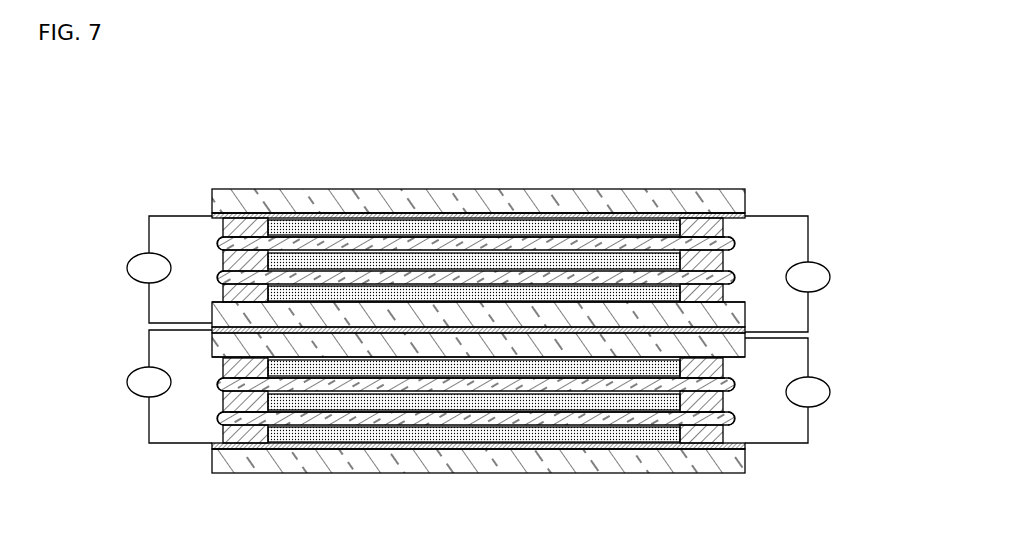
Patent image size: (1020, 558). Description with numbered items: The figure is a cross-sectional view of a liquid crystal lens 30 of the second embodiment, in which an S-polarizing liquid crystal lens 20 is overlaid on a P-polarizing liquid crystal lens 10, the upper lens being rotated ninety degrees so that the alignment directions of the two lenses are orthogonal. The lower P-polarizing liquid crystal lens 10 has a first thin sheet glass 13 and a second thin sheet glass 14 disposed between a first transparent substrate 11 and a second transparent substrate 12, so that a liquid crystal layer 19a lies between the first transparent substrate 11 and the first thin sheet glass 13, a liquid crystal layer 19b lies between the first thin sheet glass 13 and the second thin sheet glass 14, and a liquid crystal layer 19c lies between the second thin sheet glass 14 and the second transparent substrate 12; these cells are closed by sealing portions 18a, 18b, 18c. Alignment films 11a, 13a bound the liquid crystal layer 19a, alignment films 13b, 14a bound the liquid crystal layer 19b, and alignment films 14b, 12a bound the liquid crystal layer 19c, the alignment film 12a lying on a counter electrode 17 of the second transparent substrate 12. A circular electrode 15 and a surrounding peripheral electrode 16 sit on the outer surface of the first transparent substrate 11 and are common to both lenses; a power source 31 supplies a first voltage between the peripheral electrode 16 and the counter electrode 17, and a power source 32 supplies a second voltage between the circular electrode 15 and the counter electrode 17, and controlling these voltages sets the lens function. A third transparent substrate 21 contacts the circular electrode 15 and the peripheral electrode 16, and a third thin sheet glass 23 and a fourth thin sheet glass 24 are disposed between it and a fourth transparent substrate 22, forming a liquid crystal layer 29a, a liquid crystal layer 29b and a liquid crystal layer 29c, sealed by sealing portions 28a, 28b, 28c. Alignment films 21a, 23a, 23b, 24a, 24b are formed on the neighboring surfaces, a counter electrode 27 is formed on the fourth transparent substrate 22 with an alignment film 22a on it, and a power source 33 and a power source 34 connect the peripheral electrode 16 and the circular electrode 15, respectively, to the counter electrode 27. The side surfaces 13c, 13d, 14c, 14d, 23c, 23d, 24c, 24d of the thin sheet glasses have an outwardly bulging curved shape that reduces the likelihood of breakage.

The liquid crystal lens 30 is at (735, 118).
The S-polarizing liquid crystal lens 20 is at (70, 182).
The P-polarizing liquid crystal lens 10 is at (70, 330).
The fourth transparent substrate 22 is at (678, 200).
The alignment film 22a is at (361, 219).
The counter electrode 27 is at (308, 214).
The third transparent substrate 21 is at (541, 313).
The alignment film 21a is at (519, 300).
The third thin sheet glass 23 is at (474, 211).
The alignment film 23a is at (481, 282).
The alignment film 23b is at (409, 245).
The side surface 23c is at (218, 277).
The side surface 23d is at (735, 277).
The fourth thin sheet glass 24 is at (498, 186).
The alignment film 24a is at (574, 247).
The alignment film 24b is at (479, 213).
The side surface 24c is at (218, 243).
The side surface 24d is at (735, 243).
The sealing portion 28a is at (724, 292).
The sealing portion 28b is at (724, 262).
The sealing portion 28c is at (724, 232).
The liquid crystal layer 29a is at (222, 294).
The liquid crystal layer 29b is at (222, 259).
The liquid crystal layer 29c is at (215, 222).
The power source 33 is at (830, 272).
The power source 34 is at (127, 264).
The circular electrode 15 is at (462, 333).
The first transparent substrate 11 is at (391, 350).
The alignment film 11a is at (420, 357).
The second transparent substrate 12 is at (670, 462).
The alignment film 12a is at (287, 448).
The first thin sheet glass 13 is at (345, 386).
The alignment film 13a is at (367, 378).
The alignment film 13b is at (487, 394).
The side surface 13c is at (218, 384).
The side surface 13d is at (735, 384).
The second thin sheet glass 14 is at (549, 418).
The alignment film 14a is at (521, 409).
The alignment film 14b is at (580, 427).
The side surface 14c is at (218, 418).
The side surface 14d is at (735, 418).
The peripheral electrode 16 is at (326, 362).
The counter electrode 17 is at (237, 445).
The sealing portion 18a is at (724, 369).
The sealing portion 18b is at (724, 400).
The sealing portion 18c is at (724, 434).
The liquid crystal layer 19a is at (222, 370).
The liquid crystal layer 19b is at (222, 401).
The liquid crystal layer 19c is at (222, 434).
The power source 31 is at (127, 380).
The power source 32 is at (830, 393).